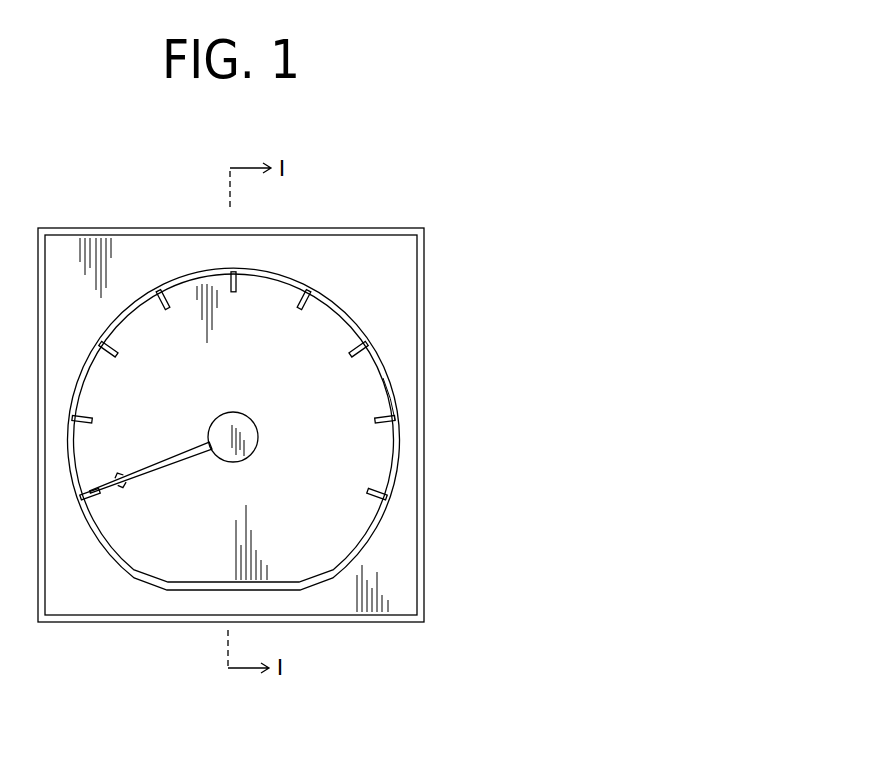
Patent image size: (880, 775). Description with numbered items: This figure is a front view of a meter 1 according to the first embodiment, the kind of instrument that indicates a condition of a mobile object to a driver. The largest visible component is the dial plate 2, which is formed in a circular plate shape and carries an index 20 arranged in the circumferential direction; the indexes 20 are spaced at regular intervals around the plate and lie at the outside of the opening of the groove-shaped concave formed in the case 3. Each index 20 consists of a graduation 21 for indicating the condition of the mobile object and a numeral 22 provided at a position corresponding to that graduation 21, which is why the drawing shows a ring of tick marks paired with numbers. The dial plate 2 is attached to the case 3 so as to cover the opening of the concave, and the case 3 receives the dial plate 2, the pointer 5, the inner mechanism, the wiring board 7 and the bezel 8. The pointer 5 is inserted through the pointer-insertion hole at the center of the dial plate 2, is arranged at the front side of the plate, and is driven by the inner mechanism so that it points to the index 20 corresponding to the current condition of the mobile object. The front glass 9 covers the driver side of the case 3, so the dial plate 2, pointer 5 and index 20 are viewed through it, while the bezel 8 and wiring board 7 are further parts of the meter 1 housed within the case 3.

The meter 1 is at (461, 198).
The dial plate 2 is at (315, 549).
The case 3 is at (425, 240).
The pointer 5 is at (177, 487).
The wiring board 7 is at (393, 393).
The bezel 8 is at (385, 295).
The front glass 9 is at (358, 326).
The index 20 is at (503, 372).
The graduation 21 is at (393, 387).
The numeral 22 is at (386, 412).